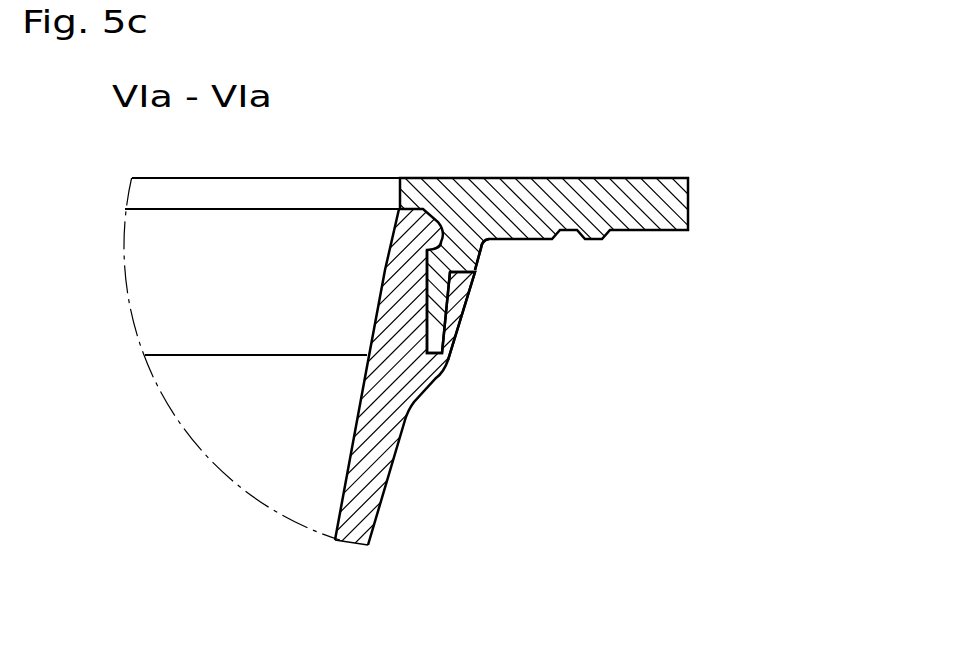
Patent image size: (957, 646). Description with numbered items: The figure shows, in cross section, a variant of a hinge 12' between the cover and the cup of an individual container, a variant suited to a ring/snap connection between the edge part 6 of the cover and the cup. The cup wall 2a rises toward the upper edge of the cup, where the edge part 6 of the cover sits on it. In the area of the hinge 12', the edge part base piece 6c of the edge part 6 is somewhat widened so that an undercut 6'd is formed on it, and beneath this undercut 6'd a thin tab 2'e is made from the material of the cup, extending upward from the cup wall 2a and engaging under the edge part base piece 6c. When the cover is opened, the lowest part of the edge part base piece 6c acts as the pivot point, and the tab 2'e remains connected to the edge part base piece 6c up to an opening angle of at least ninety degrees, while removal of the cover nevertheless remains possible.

The edge part 6 is at (542, 206).
The edge part base piece 6c is at (438, 297).
The undercut 6'd is at (637, 281).
The tab 2'e is at (512, 366).
The cup wall 2a is at (362, 508).
The hinge 12' is at (664, 241).